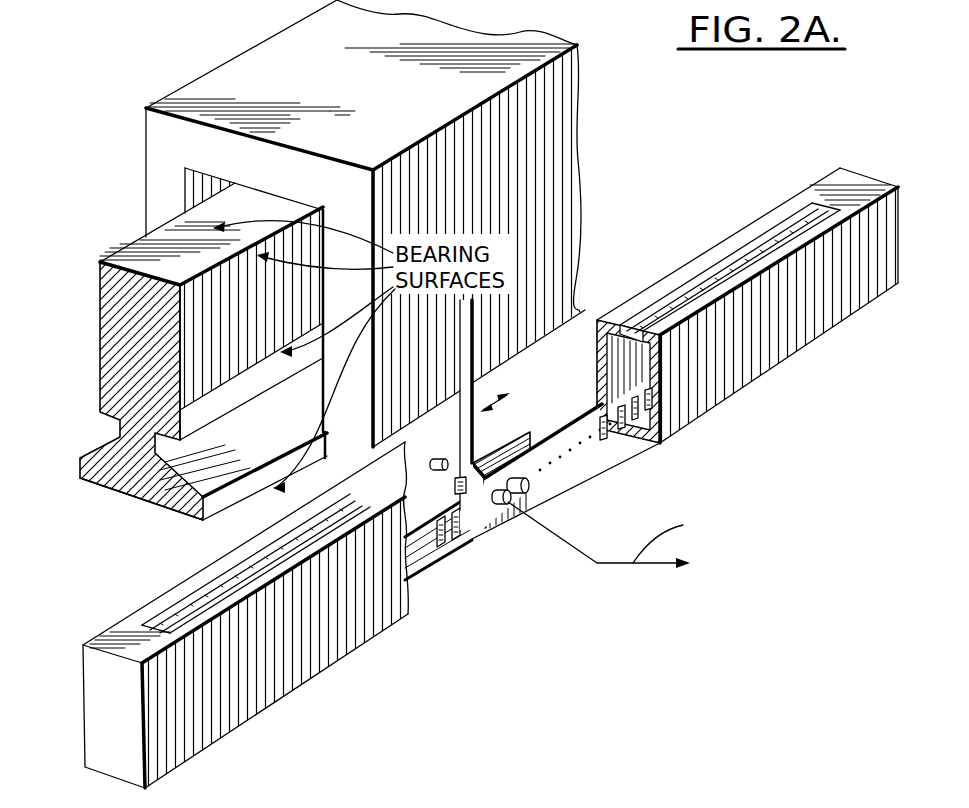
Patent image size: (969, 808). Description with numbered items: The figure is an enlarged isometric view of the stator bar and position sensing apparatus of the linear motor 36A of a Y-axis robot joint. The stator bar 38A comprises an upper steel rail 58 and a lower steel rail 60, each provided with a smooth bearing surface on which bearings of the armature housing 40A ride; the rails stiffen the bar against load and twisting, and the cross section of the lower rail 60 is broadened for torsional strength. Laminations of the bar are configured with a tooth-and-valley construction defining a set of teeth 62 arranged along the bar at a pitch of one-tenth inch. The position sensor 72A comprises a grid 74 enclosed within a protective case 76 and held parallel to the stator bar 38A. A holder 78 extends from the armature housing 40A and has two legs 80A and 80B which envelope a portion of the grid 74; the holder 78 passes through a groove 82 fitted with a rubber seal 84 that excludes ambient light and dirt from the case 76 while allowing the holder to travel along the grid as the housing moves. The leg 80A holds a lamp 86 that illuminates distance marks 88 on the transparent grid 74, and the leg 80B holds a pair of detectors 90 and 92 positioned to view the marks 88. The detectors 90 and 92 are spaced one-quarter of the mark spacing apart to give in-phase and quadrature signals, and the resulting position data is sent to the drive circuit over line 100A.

The motor 36A is at (600, 124).
The armature housing 40A is at (227, 73).
The upper steel rail 58 is at (100, 262).
The lower steel rail 60 is at (97, 402).
The teeth 62 is at (197, 342).
The stator bar 38A is at (132, 505).
The protective case 76 is at (800, 350).
The groove 82 is at (203, 593).
The rubber seal 84 is at (210, 600).
The grid 74 is at (428, 573).
The leg 80B is at (475, 513).
The leg 80A is at (452, 485).
The position sensor 72A is at (534, 425).
The holder 78 is at (522, 372).
The lamp 86 is at (437, 457).
The distance marks 88 is at (622, 430).
The detector 92 is at (527, 475).
The detector 90 is at (502, 503).
The line 100A is at (624, 535).